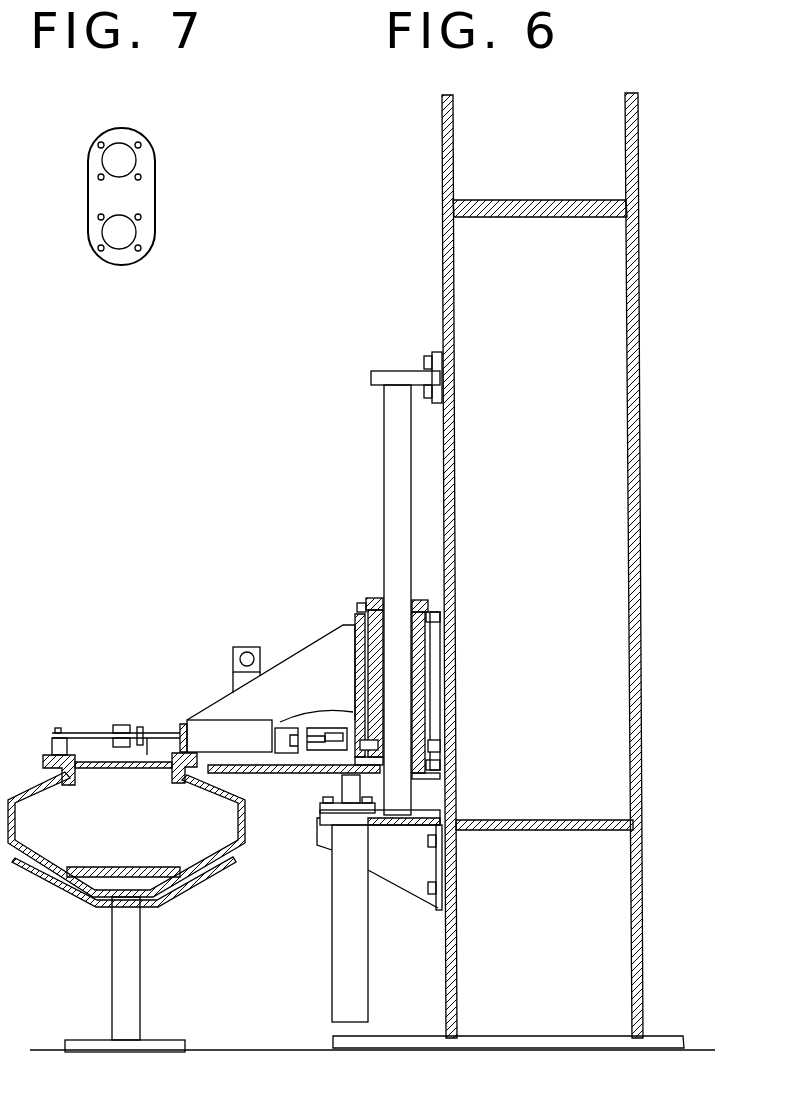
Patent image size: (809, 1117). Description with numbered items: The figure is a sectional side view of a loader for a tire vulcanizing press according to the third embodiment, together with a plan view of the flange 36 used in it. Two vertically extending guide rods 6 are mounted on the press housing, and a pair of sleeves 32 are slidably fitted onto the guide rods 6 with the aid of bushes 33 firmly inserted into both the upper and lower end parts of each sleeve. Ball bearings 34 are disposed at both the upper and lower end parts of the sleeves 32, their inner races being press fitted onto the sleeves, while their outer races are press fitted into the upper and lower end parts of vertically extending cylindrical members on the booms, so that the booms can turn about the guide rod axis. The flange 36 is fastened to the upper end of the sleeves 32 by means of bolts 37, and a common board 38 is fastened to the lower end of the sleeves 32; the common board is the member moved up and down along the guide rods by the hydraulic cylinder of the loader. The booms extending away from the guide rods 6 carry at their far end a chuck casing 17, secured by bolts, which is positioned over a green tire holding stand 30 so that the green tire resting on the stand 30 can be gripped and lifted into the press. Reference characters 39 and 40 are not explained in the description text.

In FIG. 6, the guide rod 6 is at (397, 462).
In FIG. 6, the chuck casing 17 is at (124, 770).
In FIG. 6, the green tire holding stand 30 is at (188, 880).
In FIG. 6, the sleeve 32 is at (428, 704).
In FIG. 6, the bush 33 is at (410, 625).
In FIG. 6, the ball bearing 34 is at (430, 612).
In FIG. 7, the flange 36 is at (155, 230).
In FIG. 6, the flange 36 is at (368, 612).
In FIG. 6, the bolt 37 is at (372, 600).
In FIG. 6, the common board 38 is at (280, 776).
In FIG. 6, the support leg 39 is at (353, 788).
In FIG. 6, the bracket 40 is at (287, 662).